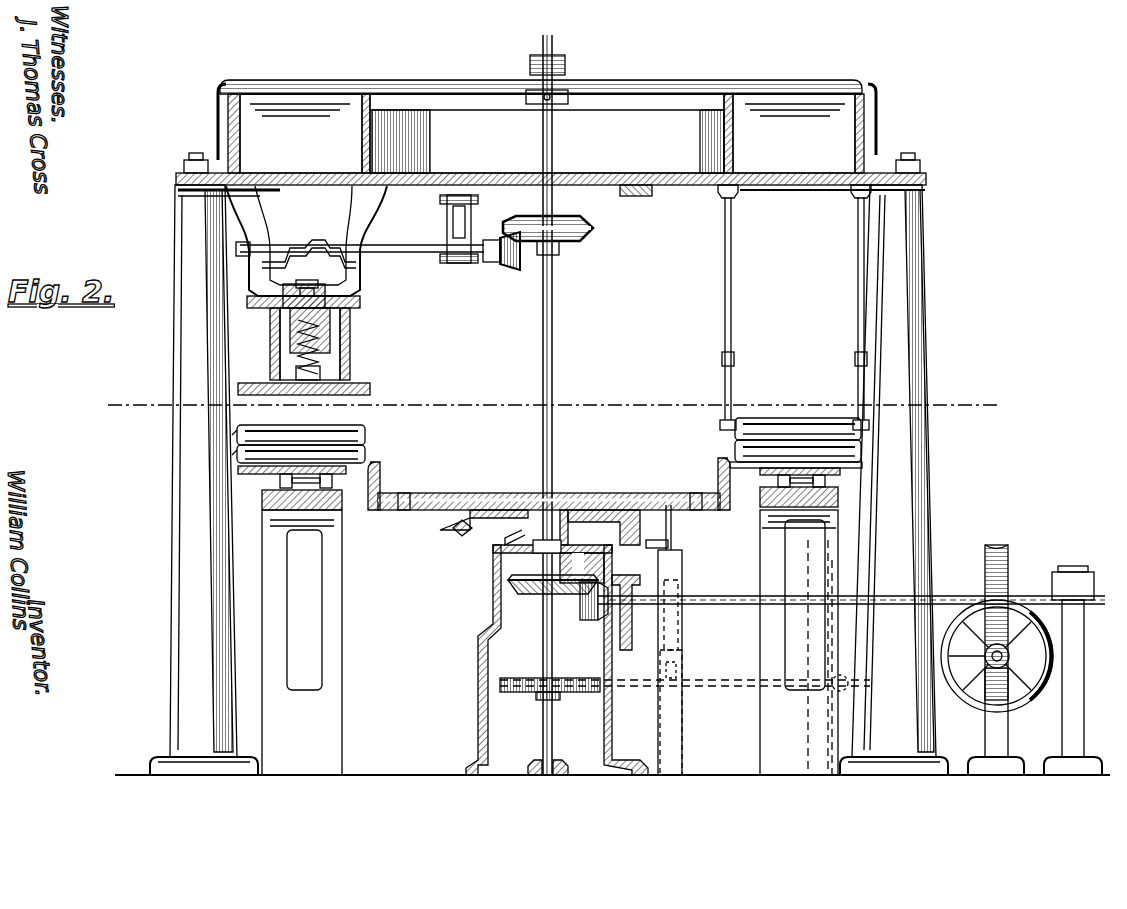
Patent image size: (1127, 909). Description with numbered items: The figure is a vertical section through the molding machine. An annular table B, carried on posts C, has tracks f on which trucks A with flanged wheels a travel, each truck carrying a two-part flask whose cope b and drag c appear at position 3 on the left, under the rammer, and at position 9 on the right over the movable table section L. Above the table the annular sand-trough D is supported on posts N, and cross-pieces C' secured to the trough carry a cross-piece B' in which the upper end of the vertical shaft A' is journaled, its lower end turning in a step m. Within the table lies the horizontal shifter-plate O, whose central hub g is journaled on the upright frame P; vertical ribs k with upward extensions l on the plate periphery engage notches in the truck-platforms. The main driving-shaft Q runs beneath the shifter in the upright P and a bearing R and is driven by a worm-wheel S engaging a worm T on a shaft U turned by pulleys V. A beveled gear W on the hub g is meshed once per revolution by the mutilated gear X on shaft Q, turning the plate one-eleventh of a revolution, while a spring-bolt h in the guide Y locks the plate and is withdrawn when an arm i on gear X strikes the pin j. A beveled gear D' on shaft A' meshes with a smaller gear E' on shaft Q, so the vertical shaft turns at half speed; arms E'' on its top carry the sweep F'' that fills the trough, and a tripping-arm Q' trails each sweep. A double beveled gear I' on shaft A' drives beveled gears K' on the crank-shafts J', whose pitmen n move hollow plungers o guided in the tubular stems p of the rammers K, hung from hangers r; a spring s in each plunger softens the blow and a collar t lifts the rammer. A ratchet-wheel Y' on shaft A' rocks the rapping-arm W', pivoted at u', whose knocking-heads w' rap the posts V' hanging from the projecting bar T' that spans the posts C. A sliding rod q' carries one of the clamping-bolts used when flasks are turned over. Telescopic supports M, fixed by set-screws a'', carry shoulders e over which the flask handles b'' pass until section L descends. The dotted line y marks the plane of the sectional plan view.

The posts N is at (948, 452).
The dotted section line y is at (550, 403).
The cross-piece B' is at (551, 166).
The horizontal arms E'' is at (541, 70).
The tripping-arm Q' is at (547, 122).
The sweep F'' is at (546, 133).
The sand-trough D is at (547, 133).
The cross-pieces C' is at (639, 459).
The vertical shaft A' is at (558, 405).
The hanger r is at (260, 232).
The pitman n is at (300, 258).
The hollow plunger o is at (330, 293).
The sliding horizontal rod q' is at (303, 332).
The tubular stem p is at (332, 334).
The collar t is at (340, 356).
The coiled spring s is at (342, 378).
The rammer K is at (321, 387).
The crank-shafts J' is at (368, 237).
The beveled gears K' is at (507, 267).
The double beveled gear I' is at (559, 235).
The supports M is at (724, 270).
The set-screws a'' is at (794, 352).
The supporting-shoulders e is at (720, 430).
The handles b'' is at (821, 402).
The trucks A is at (512, 477).
The cope b is at (600, 416).
The drag c is at (364, 452).
The position 3 is at (308, 428).
The position 9 is at (800, 420).
The flanged wheels a is at (542, 475).
The table B is at (551, 503).
The posts C is at (313, 642).
The tracks f is at (310, 512).
The vertically-movable section of table L is at (792, 500).
The worm T is at (823, 645).
The shifter-plate O is at (476, 494).
The upward extensions l is at (384, 470).
The vertical ribs k is at (376, 490).
The central hub g is at (496, 540).
The beveled gear W is at (452, 535).
The arm or projection i is at (628, 522).
The spring-bolt h is at (674, 522).
The pin j is at (656, 550).
The guide Y is at (683, 659).
The central upright frame P is at (490, 630).
The beveled gear D' is at (553, 595).
The smaller beveled gear E' is at (590, 613).
The main driving-shaft Q is at (851, 589).
The mutilated beveled gear X is at (636, 626).
The pivot u' is at (685, 677).
The ratchet-wheel Y' is at (550, 700).
The rapping-arm W' is at (685, 701).
The knocking-heads w' is at (820, 673).
The posts V' is at (846, 667).
The step m is at (562, 761).
The worm-wheel S is at (996, 548).
The projecting bar T' is at (997, 656).
The shaft U is at (982, 656).
The pulleys V is at (1006, 721).
The bearing R is at (1080, 666).